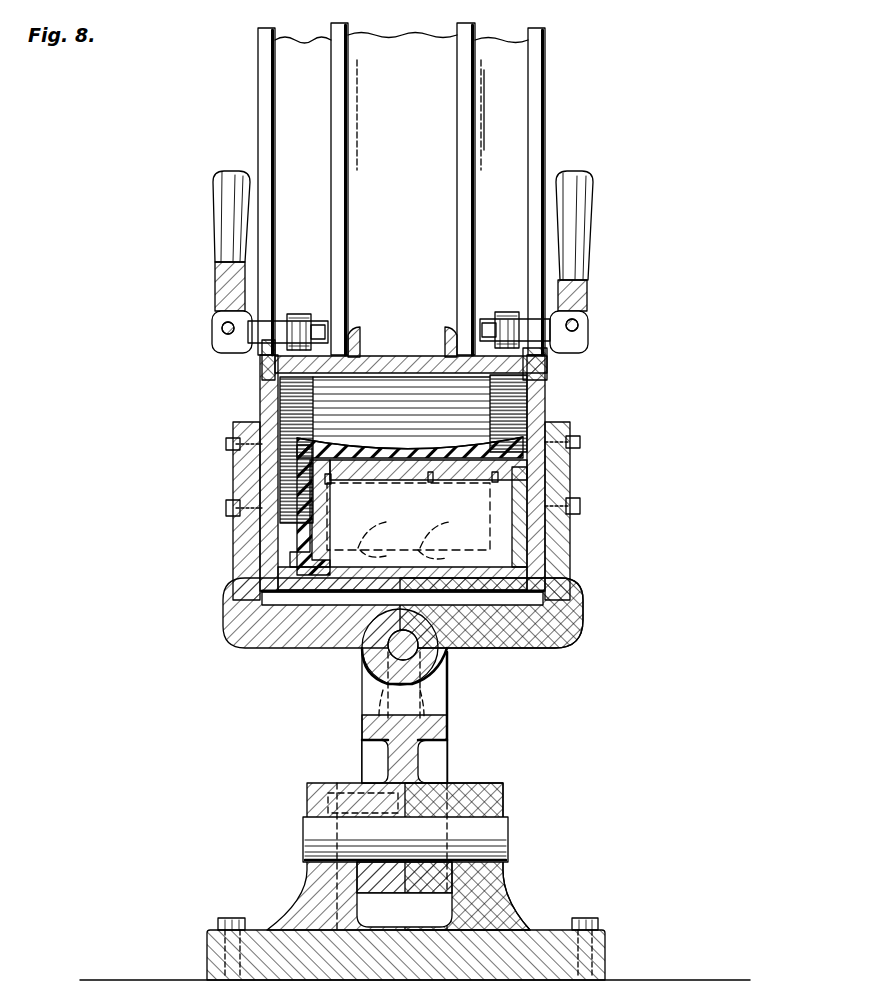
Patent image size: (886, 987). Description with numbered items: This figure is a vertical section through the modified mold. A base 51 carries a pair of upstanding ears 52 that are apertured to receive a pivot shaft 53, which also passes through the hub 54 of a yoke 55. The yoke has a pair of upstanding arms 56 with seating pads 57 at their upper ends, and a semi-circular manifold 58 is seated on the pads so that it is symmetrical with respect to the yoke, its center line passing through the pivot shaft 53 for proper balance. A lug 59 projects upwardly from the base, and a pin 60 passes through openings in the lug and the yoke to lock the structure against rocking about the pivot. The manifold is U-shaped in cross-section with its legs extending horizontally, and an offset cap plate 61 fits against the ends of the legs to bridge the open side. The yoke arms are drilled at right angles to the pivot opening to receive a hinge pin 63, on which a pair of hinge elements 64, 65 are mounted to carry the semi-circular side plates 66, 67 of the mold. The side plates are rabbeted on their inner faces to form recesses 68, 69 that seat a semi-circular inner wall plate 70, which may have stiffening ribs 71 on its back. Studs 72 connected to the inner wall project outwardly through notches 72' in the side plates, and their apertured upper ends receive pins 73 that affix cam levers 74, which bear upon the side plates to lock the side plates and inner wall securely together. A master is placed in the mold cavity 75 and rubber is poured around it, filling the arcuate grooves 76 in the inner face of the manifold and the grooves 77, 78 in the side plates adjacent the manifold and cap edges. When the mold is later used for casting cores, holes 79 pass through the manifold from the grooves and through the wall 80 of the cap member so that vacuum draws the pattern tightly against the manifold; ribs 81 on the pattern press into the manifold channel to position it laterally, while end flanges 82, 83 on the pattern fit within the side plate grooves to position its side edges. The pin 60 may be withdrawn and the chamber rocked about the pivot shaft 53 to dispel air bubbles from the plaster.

The base 51 is at (214, 944).
The upstanding ears 52 is at (308, 882).
The pivot shaft 53 is at (504, 830).
The hub 54 is at (426, 890).
The yoke 55 is at (452, 760).
The upstanding arms 56 is at (412, 706).
The seating pads 57 is at (482, 564).
The semi-circular manifold 58 is at (468, 531).
The lug 59 is at (350, 834).
The pin 60 is at (346, 786).
The cap plate 61 is at (308, 603).
The hinge pin 63 is at (442, 654).
The hinge element 64 is at (252, 638).
The hinge element 65 is at (544, 646).
The side plate 66 is at (260, 399).
The side plate 67 is at (550, 400).
The recess 68 is at (264, 378).
The recess 69 is at (546, 360).
The inner wall plate 70 is at (392, 373).
The stiffening ribs 71 is at (356, 350).
The studs 72 is at (397, 307).
The notches 72' is at (406, 340).
The pins 73 is at (222, 330).
The cam levers 74 is at (210, 209).
The mold cavity 75 is at (412, 404).
The arcuate grooves 76 is at (366, 478).
The groove 77 is at (234, 549).
The groove 78 is at (562, 451).
The holes 79 is at (332, 486).
The wall 80 is at (332, 538).
The ribs 81 is at (348, 455).
The end flange 82 is at (232, 521).
The end flange 83 is at (566, 476).